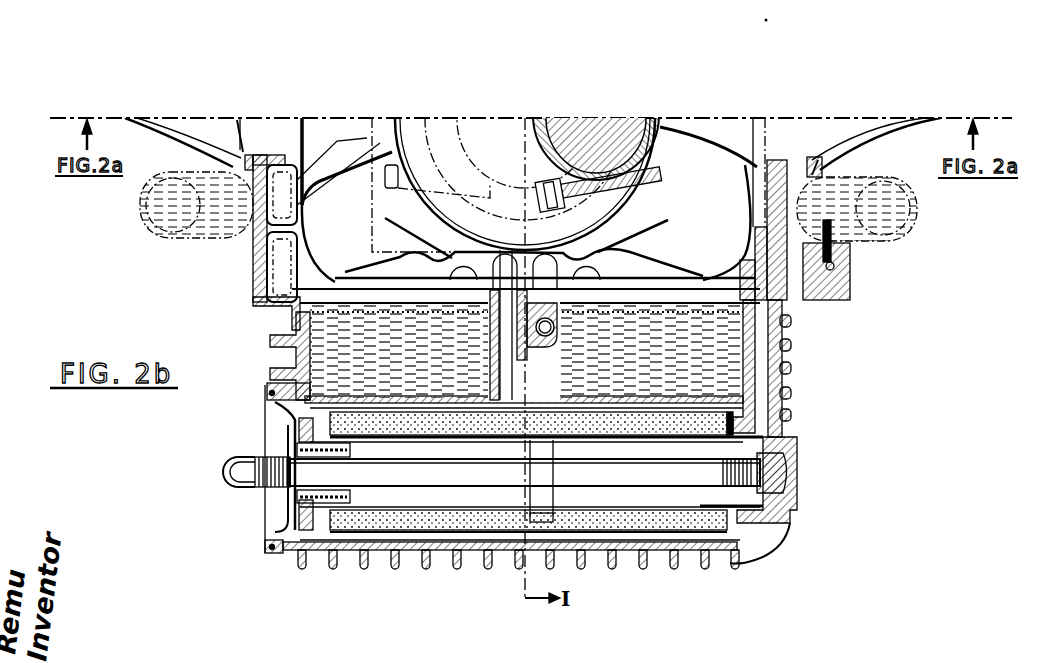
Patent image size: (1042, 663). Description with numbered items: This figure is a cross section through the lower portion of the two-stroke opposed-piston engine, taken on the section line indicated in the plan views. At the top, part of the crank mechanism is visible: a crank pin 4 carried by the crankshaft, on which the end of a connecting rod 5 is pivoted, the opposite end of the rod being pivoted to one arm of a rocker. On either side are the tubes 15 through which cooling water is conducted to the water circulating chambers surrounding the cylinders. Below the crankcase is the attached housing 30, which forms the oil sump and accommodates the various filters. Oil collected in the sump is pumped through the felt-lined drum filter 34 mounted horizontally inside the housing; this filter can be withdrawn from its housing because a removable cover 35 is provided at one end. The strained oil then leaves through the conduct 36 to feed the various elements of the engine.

The crank pin 4 is at (628, 152).
The connecting rod 5 is at (233, 121).
The tube 15 is at (172, 207).
The housing 30 is at (748, 378).
The drum filter 34 is at (667, 513).
The removable cover 35 is at (283, 510).
The conduct 36 is at (511, 398).